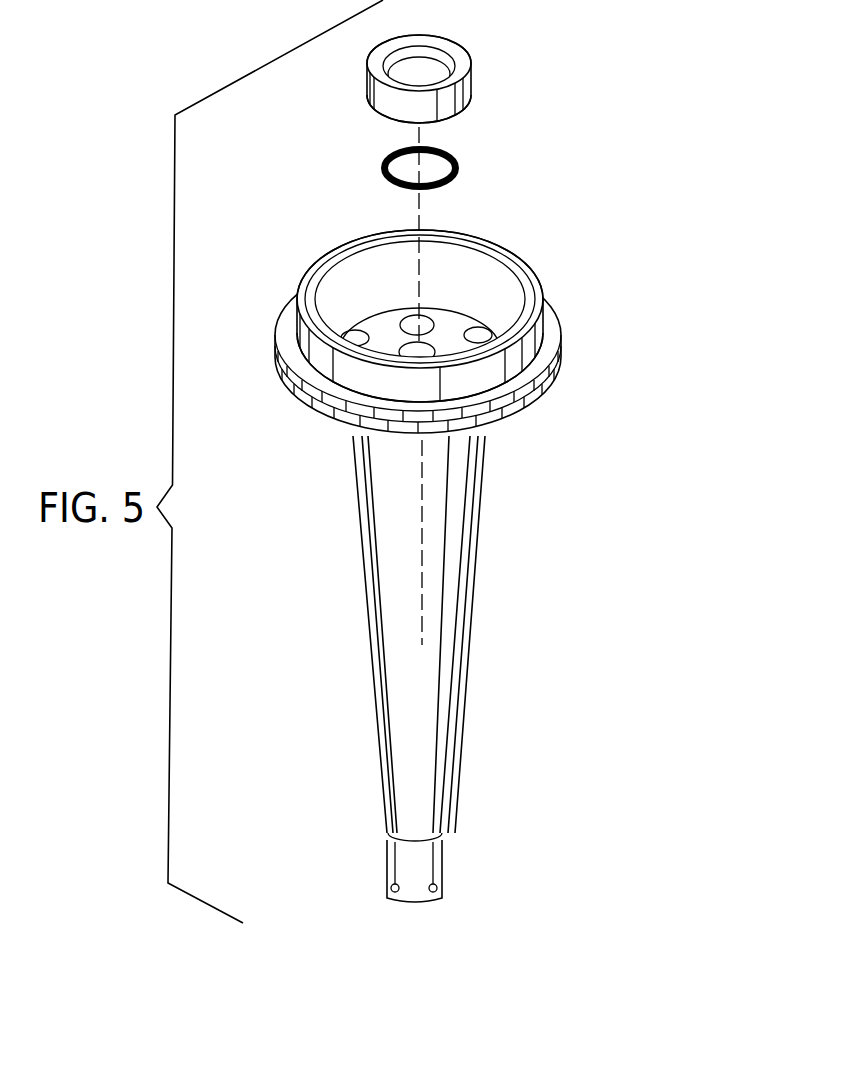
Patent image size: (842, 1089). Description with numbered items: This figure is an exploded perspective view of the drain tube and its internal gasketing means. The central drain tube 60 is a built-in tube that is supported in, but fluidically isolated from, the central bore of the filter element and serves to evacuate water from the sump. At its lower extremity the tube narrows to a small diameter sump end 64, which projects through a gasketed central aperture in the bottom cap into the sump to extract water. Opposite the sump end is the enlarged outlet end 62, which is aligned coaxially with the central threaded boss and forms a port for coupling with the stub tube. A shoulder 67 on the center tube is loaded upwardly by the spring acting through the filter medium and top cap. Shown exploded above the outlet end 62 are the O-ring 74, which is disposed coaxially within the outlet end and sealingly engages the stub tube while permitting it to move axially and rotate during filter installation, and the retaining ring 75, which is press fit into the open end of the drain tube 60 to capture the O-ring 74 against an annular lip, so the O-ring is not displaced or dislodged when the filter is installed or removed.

The central drain tube 60 is at (367, 603).
The outlet end 62 is at (553, 292).
The sump end 64 is at (442, 862).
The shoulder 67 is at (547, 357).
The O-ring 74 is at (455, 158).
The retaining ring 75 is at (472, 90).